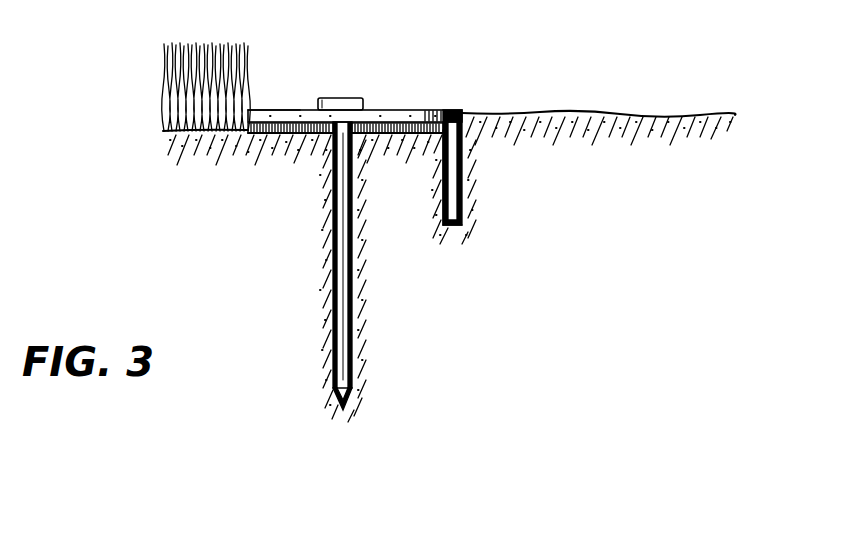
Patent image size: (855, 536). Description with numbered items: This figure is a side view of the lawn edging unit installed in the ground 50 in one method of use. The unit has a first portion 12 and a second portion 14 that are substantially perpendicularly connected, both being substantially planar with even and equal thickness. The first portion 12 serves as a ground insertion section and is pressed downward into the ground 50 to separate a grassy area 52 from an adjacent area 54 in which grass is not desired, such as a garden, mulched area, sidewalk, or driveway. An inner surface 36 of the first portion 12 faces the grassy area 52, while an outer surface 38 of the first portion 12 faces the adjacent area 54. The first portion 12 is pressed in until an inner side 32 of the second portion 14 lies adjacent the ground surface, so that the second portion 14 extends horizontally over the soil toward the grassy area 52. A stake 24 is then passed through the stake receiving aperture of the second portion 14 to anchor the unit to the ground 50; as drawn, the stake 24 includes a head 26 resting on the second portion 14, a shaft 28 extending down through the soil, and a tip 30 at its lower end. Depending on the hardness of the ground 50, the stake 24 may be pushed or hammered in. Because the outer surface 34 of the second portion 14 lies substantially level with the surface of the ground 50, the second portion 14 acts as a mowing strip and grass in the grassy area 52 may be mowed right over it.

The first portion 12 is at (465, 172).
The second portion 14 is at (420, 110).
The stake 24 is at (300, 230).
The head 26 is at (347, 97).
The shaft 28 is at (347, 316).
The tip 30 is at (347, 397).
The inner side 32 is at (288, 138).
The outer surface 34 is at (282, 109).
The inner surface 36 is at (442, 212).
The outer surface 38 is at (463, 215).
The ground 50 is at (592, 306).
The grassy area 52 is at (188, 110).
The area 54 is at (617, 113).